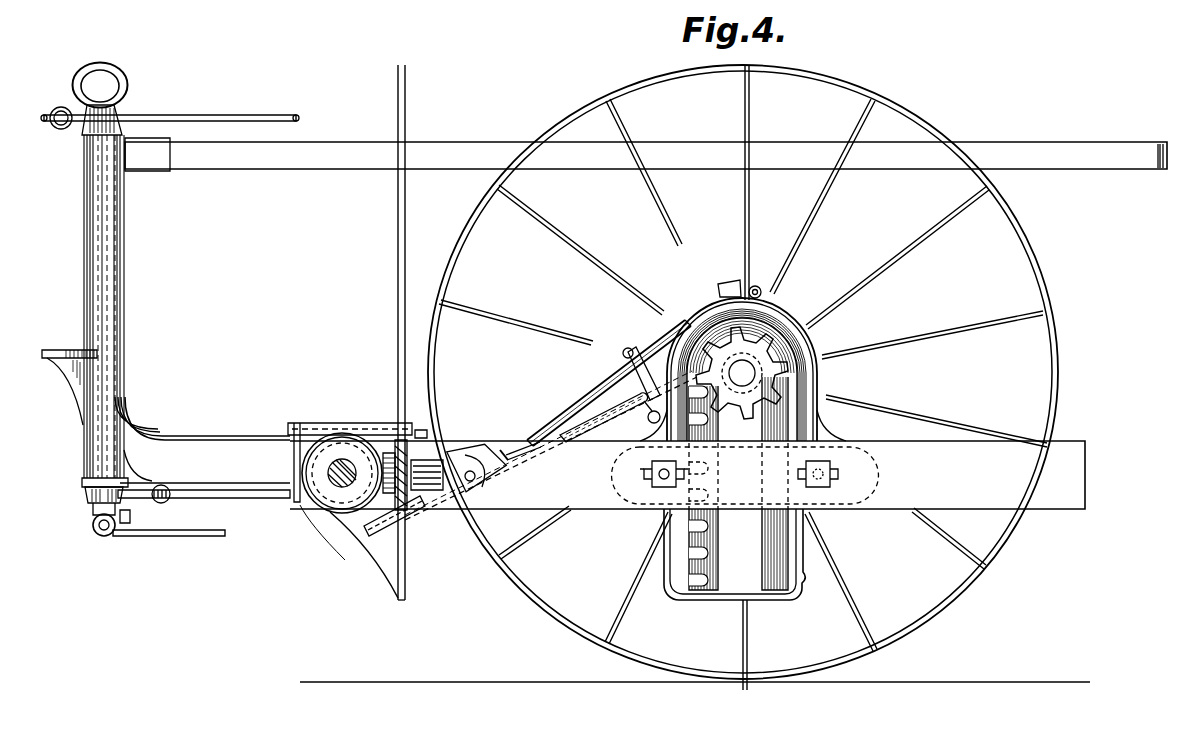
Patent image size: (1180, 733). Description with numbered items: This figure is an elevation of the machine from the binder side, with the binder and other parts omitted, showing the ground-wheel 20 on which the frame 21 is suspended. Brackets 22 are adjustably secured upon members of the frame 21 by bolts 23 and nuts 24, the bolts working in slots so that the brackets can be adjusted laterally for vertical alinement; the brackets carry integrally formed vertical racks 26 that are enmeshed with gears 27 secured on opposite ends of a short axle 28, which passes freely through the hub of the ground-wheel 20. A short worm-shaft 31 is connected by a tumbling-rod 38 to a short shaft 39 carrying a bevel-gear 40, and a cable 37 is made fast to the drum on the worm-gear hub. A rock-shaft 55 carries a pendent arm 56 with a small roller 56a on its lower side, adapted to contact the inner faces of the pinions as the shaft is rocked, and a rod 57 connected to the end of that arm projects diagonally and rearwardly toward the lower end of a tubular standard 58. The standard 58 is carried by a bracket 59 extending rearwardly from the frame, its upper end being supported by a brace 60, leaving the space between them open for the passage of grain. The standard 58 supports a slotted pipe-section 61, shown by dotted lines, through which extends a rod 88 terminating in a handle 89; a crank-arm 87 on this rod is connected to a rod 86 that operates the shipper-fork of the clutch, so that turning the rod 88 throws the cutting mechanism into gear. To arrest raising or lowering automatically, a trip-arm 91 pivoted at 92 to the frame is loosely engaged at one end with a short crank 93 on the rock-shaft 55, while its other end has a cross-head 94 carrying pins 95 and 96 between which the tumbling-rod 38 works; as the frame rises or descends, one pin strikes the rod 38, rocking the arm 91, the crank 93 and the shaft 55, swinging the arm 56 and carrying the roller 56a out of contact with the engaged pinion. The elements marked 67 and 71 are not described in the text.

The ground-wheel 20 is at (1050, 284).
The frame 21 is at (687, 475).
The brackets 22 is at (806, 532).
The bolts 23 is at (664, 480).
The nuts 24 is at (654, 480).
The vertical racks 26 is at (718, 540).
The gears 27 is at (743, 369).
The short axle 28 is at (742, 373).
The worm-shaft 31 is at (700, 288).
The cable 37 is at (648, 416).
The tumbling-rod 38 is at (576, 406).
The short shaft 39 is at (452, 455).
The bevel-gear 40 is at (386, 452).
The rock-shaft 55 is at (302, 423).
The pendent arm 56 is at (292, 459).
The roller 56a is at (322, 503).
The rod 57 is at (244, 500).
The tubular standard 58 is at (122, 332).
The bracket 59 is at (208, 441).
The brace 60 is at (270, 160).
The pipe-section 61 is at (120, 284).
The rod 67 is at (206, 117).
The arm 71 is at (410, 520).
The rod 86 is at (187, 537).
The crank-arm 87 is at (130, 518).
The rod 88 is at (104, 374).
The handle 89 is at (128, 88).
The trip-arm 91 is at (480, 448).
The pivot 92 is at (551, 445).
The short crank 93 is at (420, 430).
The cross-head 94 is at (646, 373).
The pin 95 is at (622, 446).
The pin 96 is at (623, 351).